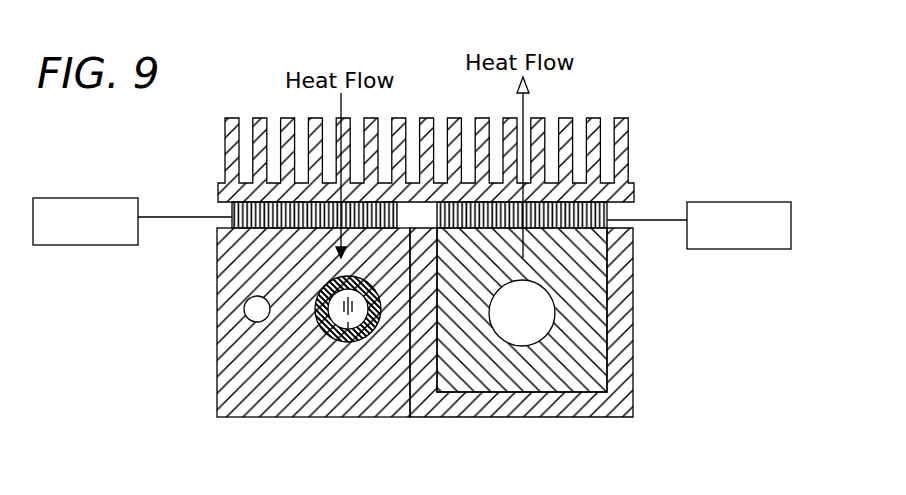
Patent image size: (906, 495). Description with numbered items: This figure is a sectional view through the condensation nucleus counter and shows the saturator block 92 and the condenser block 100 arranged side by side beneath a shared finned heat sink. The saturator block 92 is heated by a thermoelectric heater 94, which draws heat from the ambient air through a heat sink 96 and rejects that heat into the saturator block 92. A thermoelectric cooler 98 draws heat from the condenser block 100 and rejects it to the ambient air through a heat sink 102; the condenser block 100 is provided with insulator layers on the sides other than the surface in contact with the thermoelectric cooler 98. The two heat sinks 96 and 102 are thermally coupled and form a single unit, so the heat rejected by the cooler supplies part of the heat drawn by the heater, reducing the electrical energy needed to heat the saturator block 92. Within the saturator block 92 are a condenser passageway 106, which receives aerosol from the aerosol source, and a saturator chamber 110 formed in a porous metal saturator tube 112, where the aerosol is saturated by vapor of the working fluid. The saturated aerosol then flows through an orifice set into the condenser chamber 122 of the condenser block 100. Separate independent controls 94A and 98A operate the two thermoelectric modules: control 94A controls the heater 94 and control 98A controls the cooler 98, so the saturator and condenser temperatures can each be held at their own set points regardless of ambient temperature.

The saturator block 92 is at (237, 360).
The thermoelectric heater 94 is at (232, 214).
The control 94A is at (67, 247).
The heat sink 96 is at (431, 153).
The thermoelectric cooler 98 is at (607, 215).
The control 98A is at (748, 250).
The condenser block 100 is at (595, 337).
The heat sink 102 is at (608, 155).
The condenser passageway 106 is at (257, 309).
The saturator chamber 110 is at (348, 330).
The porous metal saturator tube 112 is at (342, 340).
The condenser chamber 122 is at (535, 323).